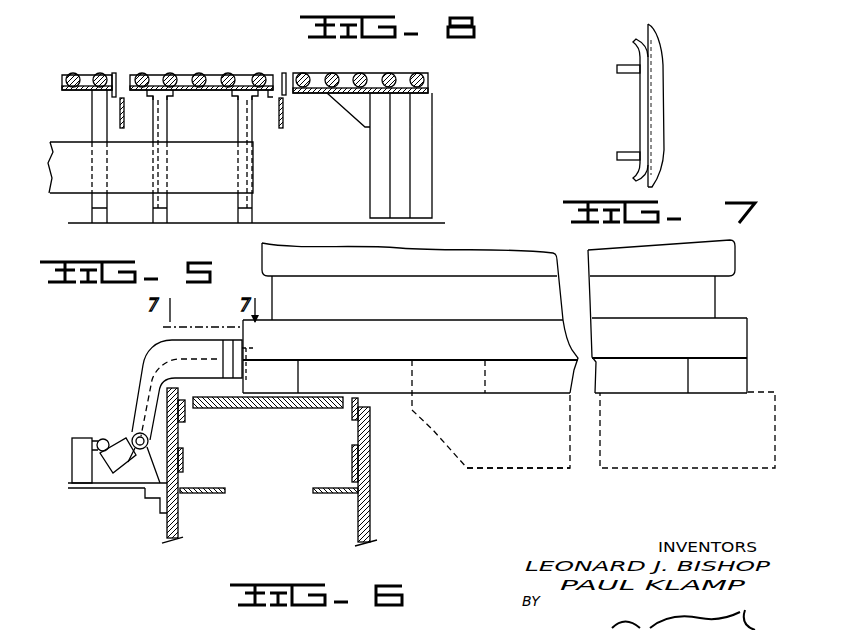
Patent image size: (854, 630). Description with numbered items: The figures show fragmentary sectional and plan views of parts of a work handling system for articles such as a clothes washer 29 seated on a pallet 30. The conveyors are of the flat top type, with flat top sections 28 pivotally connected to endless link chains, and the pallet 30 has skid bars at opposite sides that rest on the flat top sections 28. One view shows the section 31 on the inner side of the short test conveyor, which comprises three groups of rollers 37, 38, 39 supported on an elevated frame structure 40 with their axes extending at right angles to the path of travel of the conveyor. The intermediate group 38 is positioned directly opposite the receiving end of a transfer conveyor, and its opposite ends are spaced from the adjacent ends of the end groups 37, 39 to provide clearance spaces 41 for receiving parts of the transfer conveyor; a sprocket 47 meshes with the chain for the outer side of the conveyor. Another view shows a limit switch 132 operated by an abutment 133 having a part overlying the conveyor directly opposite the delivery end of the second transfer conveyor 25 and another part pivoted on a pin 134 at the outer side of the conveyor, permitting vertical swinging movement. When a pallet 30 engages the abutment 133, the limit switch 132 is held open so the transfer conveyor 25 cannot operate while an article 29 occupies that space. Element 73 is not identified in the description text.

In FIG. 6, the second transfer conveyor 25 is at (558, 456).
In FIG. 6, the flat top sections 28 is at (300, 409).
In FIG. 6, the clothes washer 29 is at (466, 248).
In FIG. 7, the pallet 30 is at (657, 122).
In FIG. 6, the pallet 30 is at (402, 327).
In FIG. 5, the section 31 is at (181, 72).
In FIG. 5, the group of rollers 37 is at (404, 72).
In FIG. 5, the intermediate group of rollers 38 is at (216, 78).
In FIG. 5, the group of rollers 39 is at (79, 76).
In FIG. 5, the elevated frame structure 40 is at (90, 91).
In FIG. 5, the clearance spaces 41 is at (124, 80).
In FIG. 6, the sprocket 47 is at (336, 494).
In FIG. 5, the stop plate 73 is at (124, 120).
In FIG. 6, the stop plate 73 is at (490, 469).
In FIG. 6, the limit switch 132 is at (80, 448).
In FIG. 7, the abutment 133 is at (645, 108).
In FIG. 6, the abutment 133 is at (227, 338).
In FIG. 6, the pin 134 is at (139, 450).